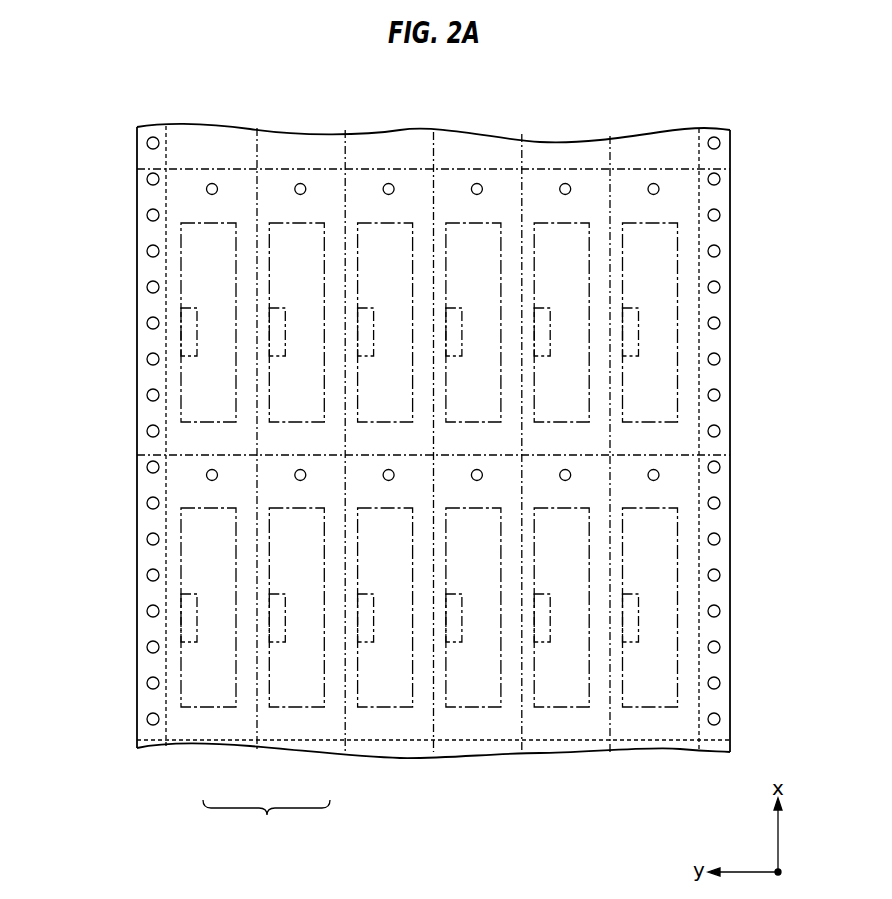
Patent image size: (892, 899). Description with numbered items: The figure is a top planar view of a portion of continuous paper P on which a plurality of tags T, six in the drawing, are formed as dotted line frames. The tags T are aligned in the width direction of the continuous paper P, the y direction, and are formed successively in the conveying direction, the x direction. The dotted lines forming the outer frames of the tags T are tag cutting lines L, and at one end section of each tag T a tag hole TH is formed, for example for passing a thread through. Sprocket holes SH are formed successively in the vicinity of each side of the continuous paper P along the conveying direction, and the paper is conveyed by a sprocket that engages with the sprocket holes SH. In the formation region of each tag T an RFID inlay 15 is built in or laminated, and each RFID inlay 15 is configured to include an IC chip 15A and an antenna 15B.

The continuous paper P is at (700, 92).
The tag cutting line L is at (608, 160).
The tag T is at (434, 468).
The tag hole TH is at (388, 183).
The sprocket hole SH is at (147, 285).
The RFID inlay 15 is at (266, 821).
The IC chip 15A is at (275, 620).
The antenna 15B is at (297, 693).